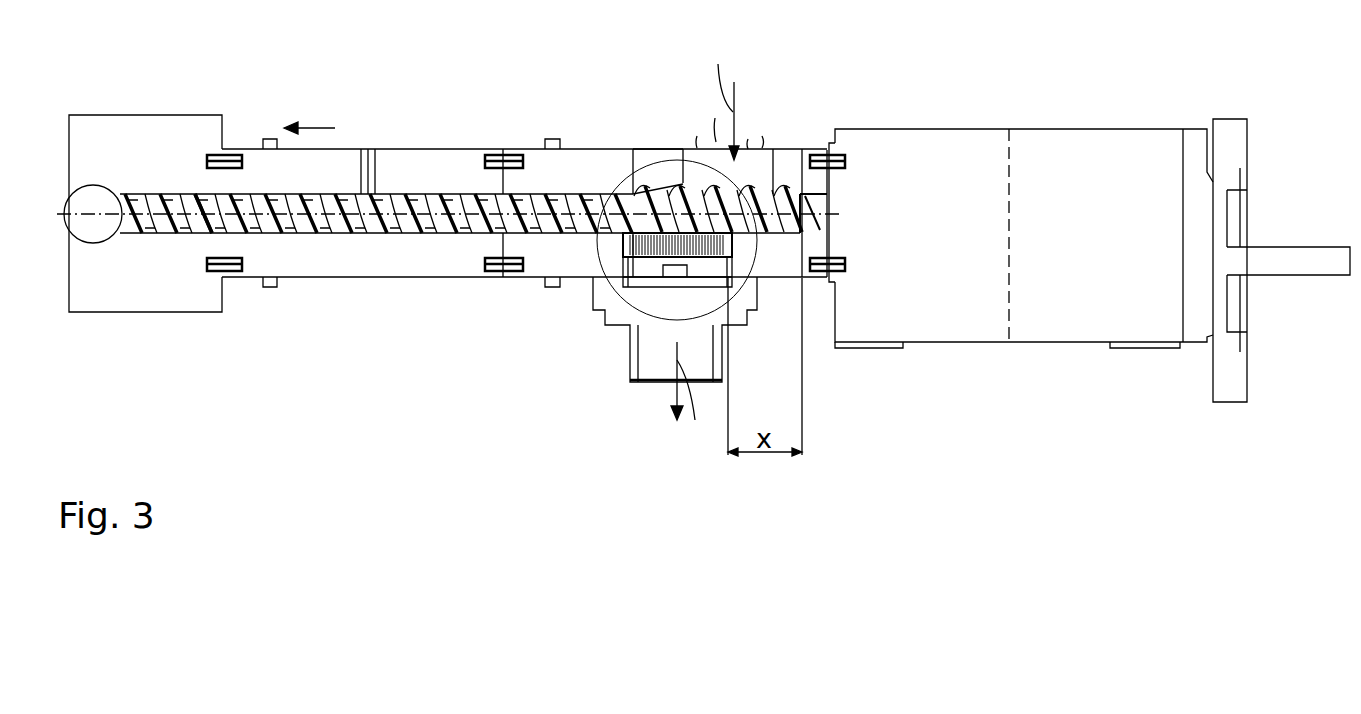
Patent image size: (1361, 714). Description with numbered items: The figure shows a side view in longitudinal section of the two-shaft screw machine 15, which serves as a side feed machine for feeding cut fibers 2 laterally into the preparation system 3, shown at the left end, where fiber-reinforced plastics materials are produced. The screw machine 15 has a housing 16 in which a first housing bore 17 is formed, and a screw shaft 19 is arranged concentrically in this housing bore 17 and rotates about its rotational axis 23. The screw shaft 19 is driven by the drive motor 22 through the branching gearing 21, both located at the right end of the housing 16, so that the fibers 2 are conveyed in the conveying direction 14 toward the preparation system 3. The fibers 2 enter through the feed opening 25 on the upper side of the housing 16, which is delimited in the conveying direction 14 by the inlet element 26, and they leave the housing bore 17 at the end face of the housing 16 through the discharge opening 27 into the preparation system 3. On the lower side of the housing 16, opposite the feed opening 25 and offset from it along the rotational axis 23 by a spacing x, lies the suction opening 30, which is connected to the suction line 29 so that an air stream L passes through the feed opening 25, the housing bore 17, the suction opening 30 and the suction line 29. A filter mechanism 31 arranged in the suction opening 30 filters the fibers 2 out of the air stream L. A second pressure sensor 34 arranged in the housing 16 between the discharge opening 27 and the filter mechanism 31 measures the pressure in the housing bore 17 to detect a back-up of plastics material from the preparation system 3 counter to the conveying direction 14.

The cut fibers 2 is at (762, 136).
The preparation system 3 is at (121, 114).
The conveying direction 14 is at (313, 126).
The two-shaft screw machine 15 is at (572, 148).
The housing 16 is at (260, 156).
The first housing bore 17 is at (317, 237).
The screw shaft 19 is at (297, 226).
The branching gearing 21 is at (928, 134).
The drive motor 22 is at (1095, 134).
The rotational axis 23 is at (112, 243).
The feed opening 25 is at (689, 148).
The inlet element 26 is at (646, 148).
The discharge opening 27 is at (210, 232).
The suction line 29 is at (657, 370).
The suction opening 30 is at (637, 266).
The filter mechanism 31 is at (620, 241).
The second pressure sensor 34 is at (368, 156).